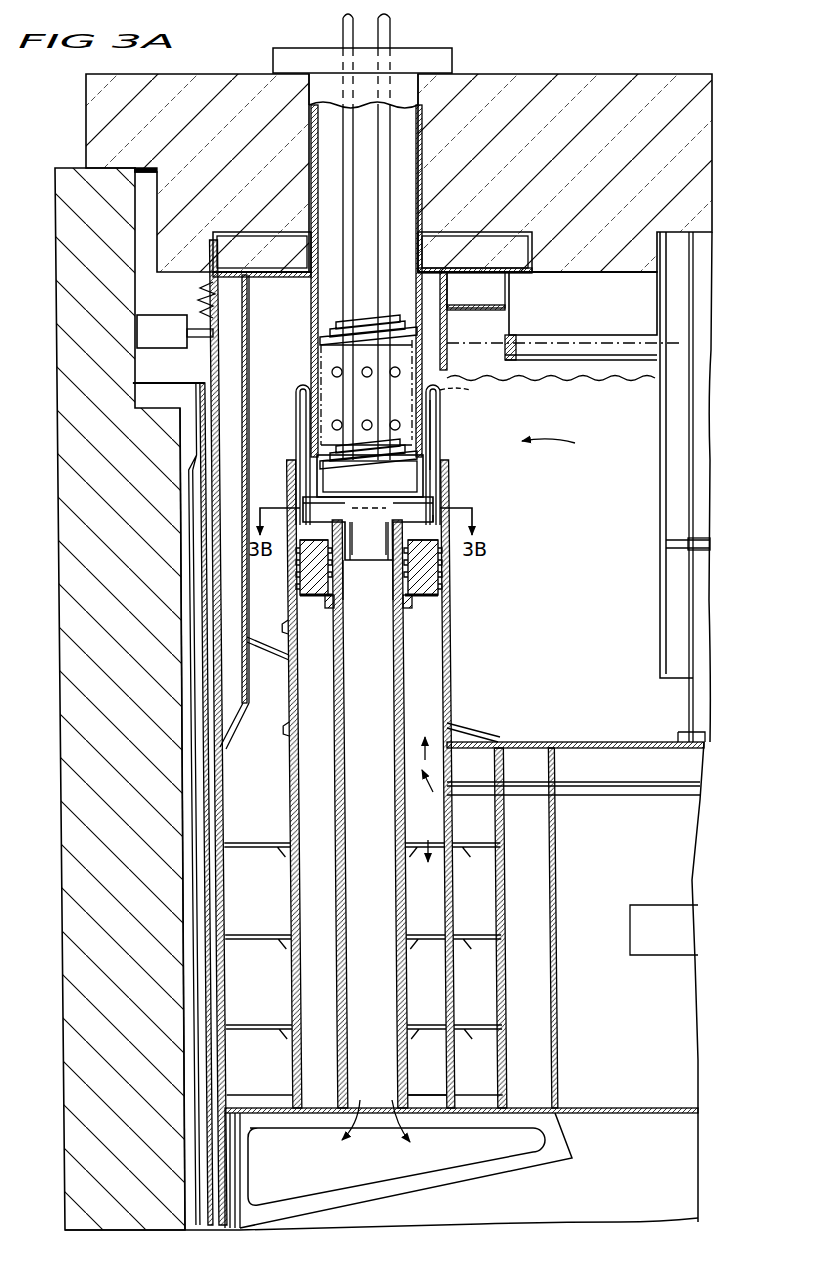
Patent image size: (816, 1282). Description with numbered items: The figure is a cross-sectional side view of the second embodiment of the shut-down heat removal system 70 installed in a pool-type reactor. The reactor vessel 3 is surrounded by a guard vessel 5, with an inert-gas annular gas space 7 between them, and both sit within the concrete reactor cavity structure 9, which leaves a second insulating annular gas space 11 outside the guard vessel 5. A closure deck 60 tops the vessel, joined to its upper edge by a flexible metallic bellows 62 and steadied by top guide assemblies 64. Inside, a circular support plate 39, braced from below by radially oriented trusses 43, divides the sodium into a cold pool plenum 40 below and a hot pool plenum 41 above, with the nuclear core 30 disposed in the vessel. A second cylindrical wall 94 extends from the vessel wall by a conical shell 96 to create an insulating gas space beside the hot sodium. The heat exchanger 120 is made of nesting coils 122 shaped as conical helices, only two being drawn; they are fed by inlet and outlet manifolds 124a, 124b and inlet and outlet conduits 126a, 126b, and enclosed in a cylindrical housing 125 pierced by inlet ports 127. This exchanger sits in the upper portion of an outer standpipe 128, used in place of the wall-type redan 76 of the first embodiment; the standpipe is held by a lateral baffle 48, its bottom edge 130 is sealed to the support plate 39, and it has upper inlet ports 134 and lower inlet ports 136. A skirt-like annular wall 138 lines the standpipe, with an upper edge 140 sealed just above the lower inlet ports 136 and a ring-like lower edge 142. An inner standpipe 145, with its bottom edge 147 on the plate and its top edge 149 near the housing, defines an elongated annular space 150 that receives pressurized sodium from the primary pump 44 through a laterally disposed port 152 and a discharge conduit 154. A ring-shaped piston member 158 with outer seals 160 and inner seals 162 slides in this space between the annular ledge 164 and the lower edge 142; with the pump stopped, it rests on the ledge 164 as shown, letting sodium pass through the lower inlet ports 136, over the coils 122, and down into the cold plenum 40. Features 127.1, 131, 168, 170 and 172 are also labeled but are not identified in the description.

The reactor vessel 3 is at (193, 768).
The guard vessel 5 is at (204, 806).
The annular gas space 7 is at (218, 855).
The reactor cavity structure 9 is at (92, 918).
The second insulating annular gas space 11 is at (188, 980).
The nuclear core 30 is at (638, 1030).
The circular support plate 39 is at (478, 1100).
The cold pool plenum 40 is at (362, 1170).
The hot pool plenum 41 is at (582, 665).
The radially oriented trusses 43 is at (312, 1200).
The primary pump 44 is at (690, 497).
The lateral baffle 48 is at (455, 728).
The closure deck 60 is at (553, 164).
The metallic bellows 62 is at (197, 298).
The top guide assemblies 64 is at (200, 338).
The shut-down heat removal system 70 is at (548, 440).
The wall-type redan 76 is at (452, 568).
The second cylindrical wall 94 is at (243, 603).
The conical shell 96 is at (236, 722).
The heat exchanger 120 is at (330, 455).
The nesting coils 122 is at (328, 338).
The inlet manifold 124a is at (290, 393).
The outlet manifold 124b is at (438, 478).
The cylindrical housing 125 is at (440, 376).
The inlet conduit 126a is at (340, 30).
The outlet conduit 126b is at (392, 30).
The inlet ports 127 is at (348, 392).
The neck tube 127.1 is at (388, 548).
The outer standpipe 128 is at (452, 612).
The bottom edge 130 is at (294, 1100).
The box 131 is at (455, 298).
The upper inlet ports 134 is at (447, 340).
The lower inlet ports 136 is at (440, 402).
The annular wall 138 is at (318, 465).
The upper edge 140 is at (385, 435).
The ring-like lower edge 142 is at (445, 522).
The inner standpipe 145 is at (412, 915).
The bottom edge 147 is at (416, 1100).
The top edge 149 is at (345, 505).
The elongated annular space 150 is at (455, 760).
The laterally disposed port 152 is at (424, 799).
The discharge conduit 154 is at (604, 795).
The ring-shaped piston member 158 is at (312, 577).
The outer seals 160 is at (442, 580).
The inner seals 162 is at (408, 570).
The annular ledge 164 is at (330, 610).
The top plate 168 is at (445, 60).
The liquid level 170 is at (585, 382).
The block 172 is at (620, 345).